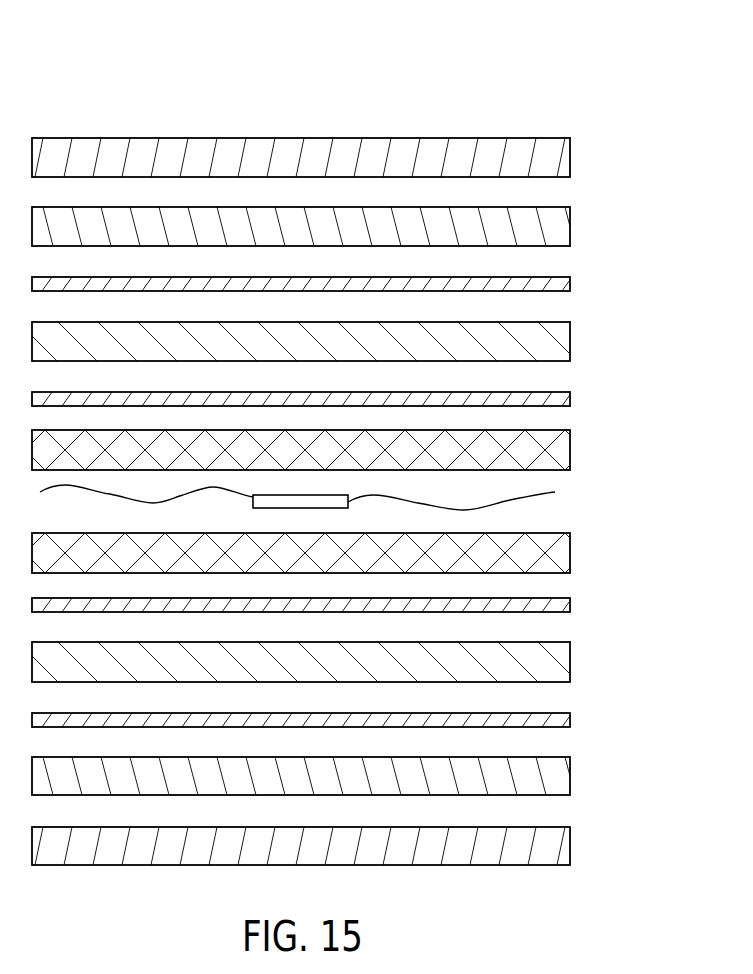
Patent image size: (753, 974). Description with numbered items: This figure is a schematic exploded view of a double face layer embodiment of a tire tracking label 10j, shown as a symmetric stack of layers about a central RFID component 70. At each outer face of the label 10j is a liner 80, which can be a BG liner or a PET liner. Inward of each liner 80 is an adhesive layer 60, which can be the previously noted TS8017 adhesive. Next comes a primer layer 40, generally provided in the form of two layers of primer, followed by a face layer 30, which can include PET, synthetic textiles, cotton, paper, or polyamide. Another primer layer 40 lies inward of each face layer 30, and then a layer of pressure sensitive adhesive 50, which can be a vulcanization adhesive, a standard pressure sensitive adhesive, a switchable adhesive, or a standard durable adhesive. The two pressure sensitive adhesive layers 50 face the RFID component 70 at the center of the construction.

The label 10j is at (622, 96).
The liner 80 is at (570, 158).
The adhesive layer 60 is at (570, 227).
The primer layer 40 is at (570, 284).
The face layer 30 is at (570, 343).
The pressure sensitive adhesive 50 is at (570, 450).
The RFID component 70 is at (580, 507).